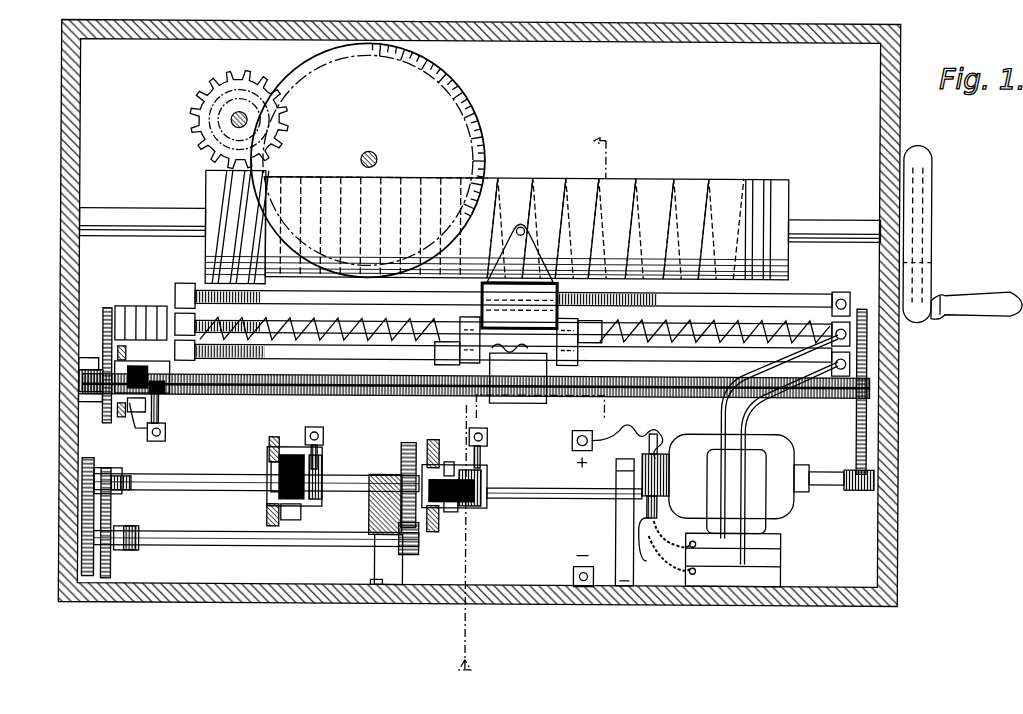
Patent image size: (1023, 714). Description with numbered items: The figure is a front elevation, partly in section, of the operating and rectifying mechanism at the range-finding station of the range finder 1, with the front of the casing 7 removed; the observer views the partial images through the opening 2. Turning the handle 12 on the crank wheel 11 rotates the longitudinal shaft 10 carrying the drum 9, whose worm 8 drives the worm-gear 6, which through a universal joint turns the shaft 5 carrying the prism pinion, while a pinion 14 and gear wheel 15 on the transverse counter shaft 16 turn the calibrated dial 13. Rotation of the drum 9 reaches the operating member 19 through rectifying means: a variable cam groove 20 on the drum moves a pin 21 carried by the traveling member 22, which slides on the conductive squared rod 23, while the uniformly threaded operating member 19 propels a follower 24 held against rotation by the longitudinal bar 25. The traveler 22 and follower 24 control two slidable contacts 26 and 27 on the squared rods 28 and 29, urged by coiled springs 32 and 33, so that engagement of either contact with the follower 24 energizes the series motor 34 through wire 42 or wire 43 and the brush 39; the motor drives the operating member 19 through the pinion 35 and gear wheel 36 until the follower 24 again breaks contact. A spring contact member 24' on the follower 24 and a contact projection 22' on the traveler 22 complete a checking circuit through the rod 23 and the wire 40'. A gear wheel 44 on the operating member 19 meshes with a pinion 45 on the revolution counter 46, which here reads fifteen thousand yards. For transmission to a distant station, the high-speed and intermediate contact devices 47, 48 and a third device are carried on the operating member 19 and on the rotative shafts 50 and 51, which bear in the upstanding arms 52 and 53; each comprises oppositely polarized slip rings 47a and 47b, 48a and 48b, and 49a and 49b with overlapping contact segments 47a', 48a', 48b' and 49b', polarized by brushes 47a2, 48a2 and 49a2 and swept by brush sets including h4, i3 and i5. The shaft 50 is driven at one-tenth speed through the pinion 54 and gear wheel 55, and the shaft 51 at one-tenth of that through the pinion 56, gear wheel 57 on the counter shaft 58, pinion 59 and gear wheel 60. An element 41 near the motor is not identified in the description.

The range finder 1 is at (582, 24).
The opening 2 is at (534, 412).
The shaft 5 is at (234, 115).
The worm-gear 6 is at (221, 119).
The casing 7 is at (695, 605).
The worm 8 is at (200, 258).
The drum 9 is at (690, 180).
The longitudinal shaft 10 is at (140, 217).
The operating crank wheel 11 is at (934, 190).
The handle 12 is at (970, 298).
The calibrated dial 13 is at (458, 86).
The pinion 14 is at (190, 142).
The gear wheel 15 is at (292, 90).
The transverse counter shaft 16 is at (376, 148).
The operating member 19 is at (250, 398).
The variable cam groove 20 is at (522, 226).
The pin 21 is at (522, 238).
The traveling member 22 is at (578, 294).
The contact projection 22' is at (519, 305).
The squared rod 23 is at (825, 298).
The follower 24 is at (517, 362).
The spring contact member 24' is at (519, 341).
The longitudinal bar 25 is at (627, 433).
The slidable contact 26 is at (574, 436).
The slidable contact 27 is at (470, 398).
The squared conductive rod 28 is at (320, 336).
The squared conductive rod 29 is at (358, 362).
The coiled spring 32 is at (786, 322).
The coiled spring 33 is at (282, 396).
The auxiliary operating series motor 34 is at (770, 440).
The pinion 35 is at (862, 492).
The gear wheel 36 is at (856, 425).
The brush 39 is at (660, 455).
The wire 40' is at (409, 408).
The coil wire 41 is at (664, 549).
The wire 42 is at (735, 410).
The wire 43 is at (770, 546).
The gear wheel 44 is at (112, 425).
The pinion 45 is at (104, 308).
The revolution counter 46 is at (147, 310).
The contact device 47 is at (138, 412).
The slip ring 47a is at (172, 409).
The contact segment 47a' is at (140, 361).
The brush 47a2 is at (168, 443).
The slip ring 47b is at (95, 400).
The contact device 48 is at (294, 476).
The slip ring 48a is at (309, 485).
The contact segment 48a' is at (241, 448).
The brush 48a2 is at (326, 456).
The slip ring 48b is at (256, 515).
The contact segment 48b' is at (308, 517).
The slip ring 49a is at (490, 480).
The brush 49a2 is at (490, 456).
The slip ring 49b is at (419, 444).
The contact segment 49b' is at (475, 519).
The rotative shaft 50 is at (182, 494).
The rotative shaft 51 is at (543, 503).
The upstanding arm 52 is at (375, 515).
The upstanding arm 53 is at (620, 515).
The pinion 54 is at (82, 362).
The gear wheel 55 is at (85, 480).
The pinion 56 is at (125, 496).
The gear wheel 57 is at (97, 580).
The counter shaft 58 is at (190, 540).
The pinion 59 is at (420, 548).
The gear wheel 60 is at (402, 470).
The brush h4 is at (131, 419).
The brush i3 is at (292, 547).
The brush i5 is at (266, 475).